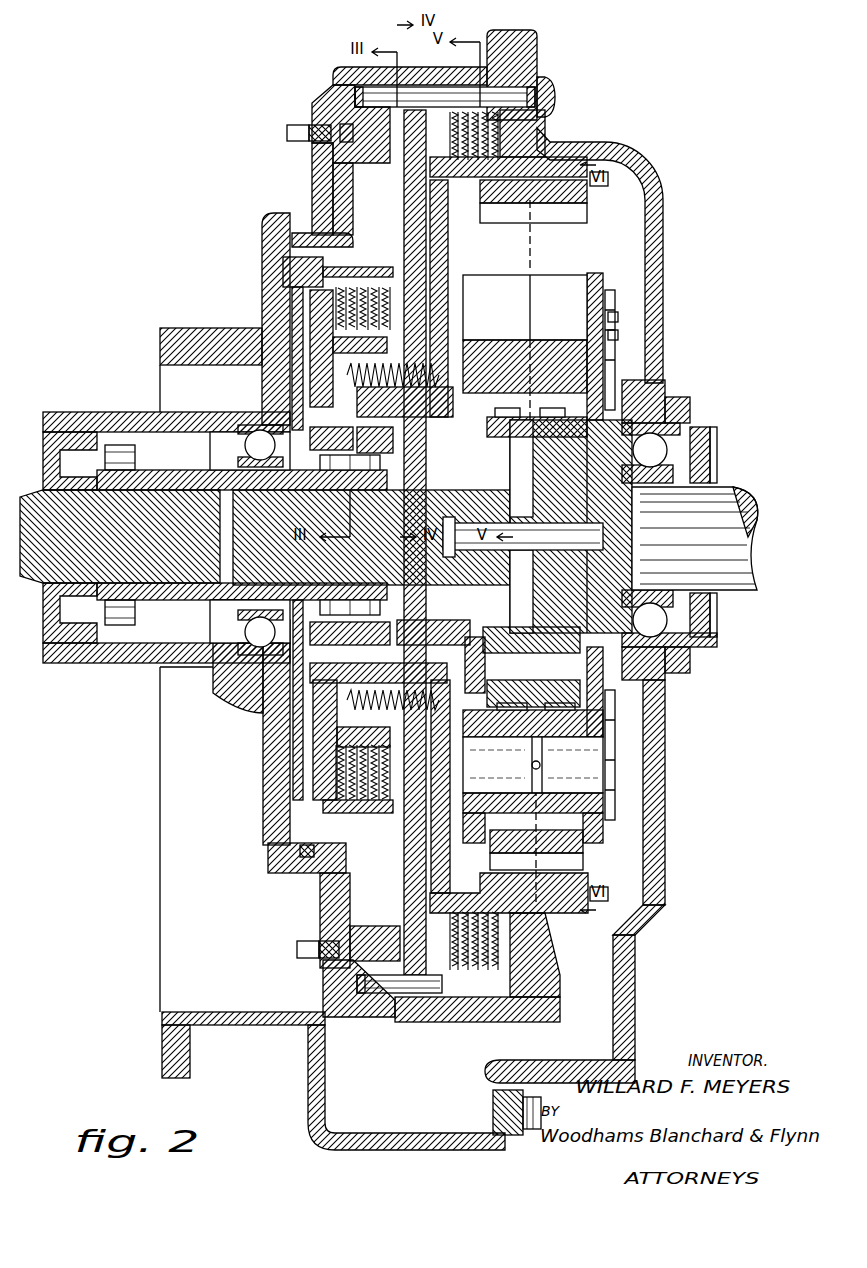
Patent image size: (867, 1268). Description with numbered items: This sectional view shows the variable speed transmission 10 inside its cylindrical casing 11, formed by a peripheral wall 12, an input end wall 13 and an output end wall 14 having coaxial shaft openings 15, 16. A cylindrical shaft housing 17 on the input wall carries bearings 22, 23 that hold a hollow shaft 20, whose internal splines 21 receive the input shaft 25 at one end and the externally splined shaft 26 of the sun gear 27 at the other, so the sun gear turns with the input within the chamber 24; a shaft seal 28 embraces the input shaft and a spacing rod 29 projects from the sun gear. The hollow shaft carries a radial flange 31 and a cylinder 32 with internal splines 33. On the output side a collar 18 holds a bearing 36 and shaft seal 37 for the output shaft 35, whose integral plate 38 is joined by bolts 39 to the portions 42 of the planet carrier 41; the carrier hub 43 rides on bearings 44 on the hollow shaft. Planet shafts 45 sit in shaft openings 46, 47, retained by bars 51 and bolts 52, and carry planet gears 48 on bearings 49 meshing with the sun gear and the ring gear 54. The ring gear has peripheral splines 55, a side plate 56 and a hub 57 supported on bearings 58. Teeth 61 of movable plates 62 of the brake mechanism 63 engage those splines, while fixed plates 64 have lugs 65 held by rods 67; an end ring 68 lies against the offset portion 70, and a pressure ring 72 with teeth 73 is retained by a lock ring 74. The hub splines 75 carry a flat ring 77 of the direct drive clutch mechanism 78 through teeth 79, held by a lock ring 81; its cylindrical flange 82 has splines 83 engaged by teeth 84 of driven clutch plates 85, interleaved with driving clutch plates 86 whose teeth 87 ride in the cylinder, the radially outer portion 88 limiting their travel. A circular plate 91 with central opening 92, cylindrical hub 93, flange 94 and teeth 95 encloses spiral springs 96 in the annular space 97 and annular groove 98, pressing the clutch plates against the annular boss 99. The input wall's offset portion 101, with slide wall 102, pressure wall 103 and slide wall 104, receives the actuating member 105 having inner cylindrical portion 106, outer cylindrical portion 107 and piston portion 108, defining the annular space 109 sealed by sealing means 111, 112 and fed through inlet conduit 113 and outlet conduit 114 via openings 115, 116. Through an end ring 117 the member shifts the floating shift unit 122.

The variable speed transmission 10 is at (170, 246).
The casing 11 is at (254, 263).
The peripheral wall 12 is at (345, 68).
The input end wall 13 is at (262, 230).
The output end wall 14 is at (664, 243).
The shaft opening 15 is at (244, 441).
The shaft opening 16 is at (670, 415).
The cylindrical shaft housing 17 is at (120, 412).
The collar 18 is at (692, 422).
The hollow shaft 20 is at (135, 457).
The internal splines 21 is at (176, 498).
The bearing 22 is at (90, 412).
The bearing 23 is at (210, 475).
The chamber 24 is at (630, 215).
The input shaft 25 is at (40, 497).
The externally splined shaft 26 is at (430, 585).
The sun gear 27 is at (545, 440).
The shaft seal 28 is at (50, 600).
The spacing rod 29 is at (545, 550).
The radial flange 31 is at (290, 268).
The cylinder 32 is at (345, 267).
The internal splines 33 is at (470, 276).
The output shaft 35 is at (745, 580).
The bearing 36 is at (680, 472).
The shaft seal 37 is at (712, 455).
The plate 38 is at (587, 303).
The bolts 39 is at (617, 300).
The planet carrier 41 is at (553, 268).
The portions 42 is at (572, 275).
The hub 43 is at (530, 460).
The bearings 44 is at (330, 472).
The planet shafts 45 is at (575, 800).
The shaft openings 46 is at (484, 806).
The shaft openings 47 is at (598, 805).
The planet gear 48 is at (570, 843).
The bearings 49 is at (518, 712).
The bars 51 is at (620, 318).
The bolts 52 is at (620, 335).
The ring gear 54 is at (560, 190).
The splines 55 is at (530, 210).
The side plate 56 is at (440, 230).
The hub 57 is at (393, 432).
The bearings 58 is at (350, 535).
The teeth 61 is at (500, 180).
The movable plates 62 is at (505, 140).
The brake mechanism 63 is at (457, 85).
The fixed plates 64 is at (455, 97).
The lugs 65 is at (465, 103).
The rod 67 is at (548, 90).
The end ring 68 is at (540, 135).
The offset portion 70 is at (560, 107).
The pressure ring 72 is at (445, 97).
The teeth 73 is at (448, 195).
The lock ring 74 is at (435, 157).
The splines 75 is at (295, 378).
The flat ring 77 is at (310, 330).
The direct drive clutch mechanism 78 is at (300, 238).
The teeth 79 is at (327, 395).
The lock ring 81 is at (316, 390).
The cylindrical flange 82 is at (380, 365).
The splines 83 is at (390, 335).
The teeth 84 is at (390, 345).
The driven clutch plates 85 is at (392, 310).
The driving clutch plates 86 is at (390, 300).
The teeth 87 is at (447, 266).
The radially outer portion 88 is at (310, 300).
The circular plate 91 is at (422, 245).
The central opening 92 is at (440, 375).
The cylindrical hub 93 is at (305, 340).
The flange 94 is at (300, 355).
The teeth 95 is at (395, 395).
The spiral springs 96 is at (410, 432).
The annular space 97 is at (396, 434).
The annular groove 98 is at (440, 395).
The annular boss 99 is at (400, 320).
The offset portion 101 is at (313, 158).
The slide wall 102 is at (290, 832).
The pressure wall 103 is at (370, 870).
The slide wall 104 is at (350, 920).
The actuating member 105 is at (335, 170).
The inner cylindrical portion 106 is at (300, 847).
The outer cylindrical portion 107 is at (340, 990).
The piston portion 108 is at (320, 884).
The annular space 109 is at (313, 197).
The sealing means 111 is at (280, 852).
The sealing means 112 is at (350, 970).
The inlet conduit 113 is at (290, 130).
The outlet conduit 114 is at (297, 947).
The opening 115 is at (300, 126).
The opening 116 is at (350, 960).
The end ring 117 is at (356, 95).
The floating shift unit 122 is at (294, 305).